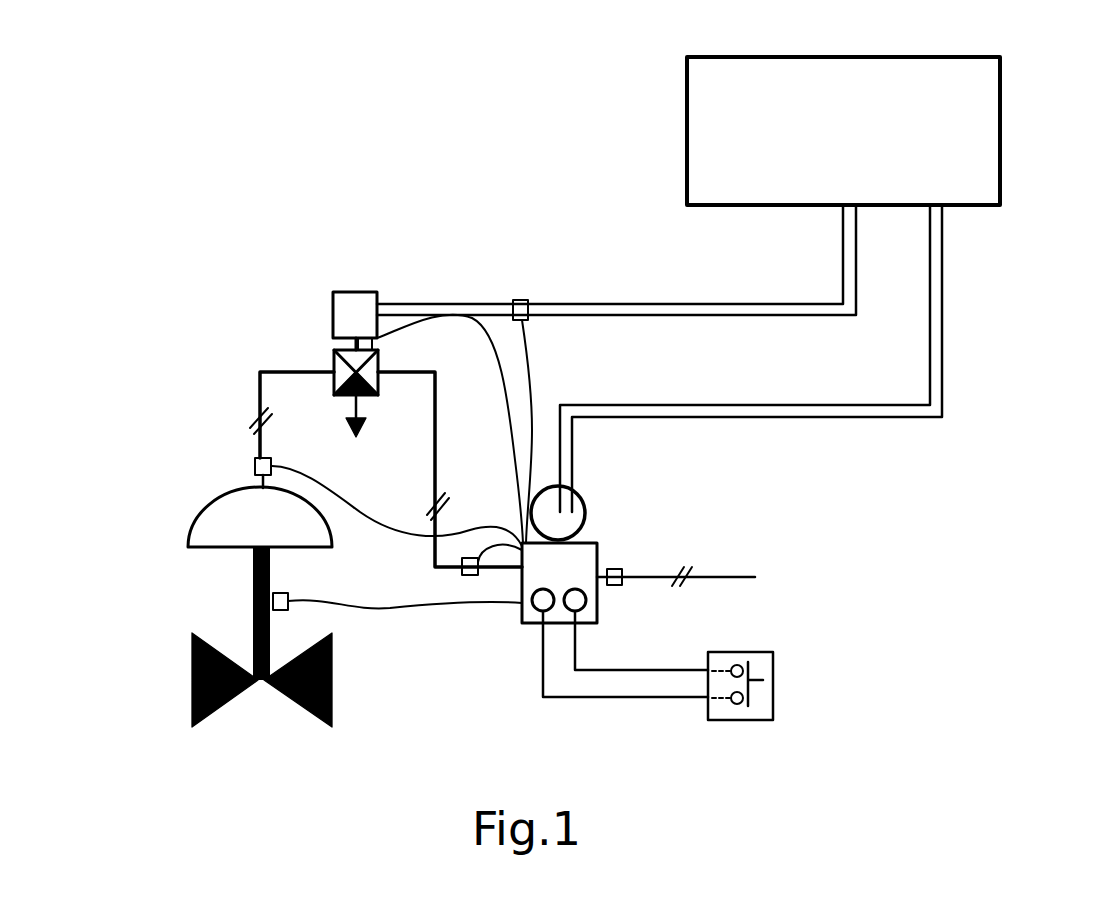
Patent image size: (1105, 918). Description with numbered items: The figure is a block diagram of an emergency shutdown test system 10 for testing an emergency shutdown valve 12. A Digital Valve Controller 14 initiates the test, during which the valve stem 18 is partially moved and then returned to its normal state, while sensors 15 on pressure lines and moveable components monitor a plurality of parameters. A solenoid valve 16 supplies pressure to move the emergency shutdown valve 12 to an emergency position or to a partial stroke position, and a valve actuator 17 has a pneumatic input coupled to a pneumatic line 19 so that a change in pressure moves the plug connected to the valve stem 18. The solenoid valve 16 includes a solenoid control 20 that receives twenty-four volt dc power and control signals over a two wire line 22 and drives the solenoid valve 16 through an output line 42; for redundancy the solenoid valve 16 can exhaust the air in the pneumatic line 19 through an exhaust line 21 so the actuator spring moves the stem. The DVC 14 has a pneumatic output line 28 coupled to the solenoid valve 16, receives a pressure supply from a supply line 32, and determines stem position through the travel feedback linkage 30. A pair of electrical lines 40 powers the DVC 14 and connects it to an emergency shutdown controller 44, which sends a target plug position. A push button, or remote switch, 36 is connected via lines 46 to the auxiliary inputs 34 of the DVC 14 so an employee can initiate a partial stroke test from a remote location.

The emergency shutdown test system 10 is at (260, 93).
The emergency shutdown (ESD) valve 12 is at (212, 645).
The Digital Valve Controller (DVC) 14 is at (590, 540).
The sensors 15 is at (372, 344).
The solenoid valve 16 is at (400, 342).
The valve actuator 17 is at (195, 513).
The valve stem 18 is at (253, 573).
The pneumatic line 19 is at (262, 371).
The solenoid control 20 is at (333, 297).
The exhaust line 21 is at (360, 405).
The two wire line 22 is at (582, 302).
The pneumatic output line 28 is at (436, 437).
The travel feedback linkage 30 is at (360, 610).
The supply line 32 is at (755, 577).
The auxiliary inputs 34 is at (597, 590).
The push button (remote switch) 36 is at (745, 720).
The pair of electrical lines 40 is at (942, 345).
The output line 42 is at (345, 349).
The emergency shutdown controller 44 is at (1000, 122).
The lines 46 is at (663, 672).